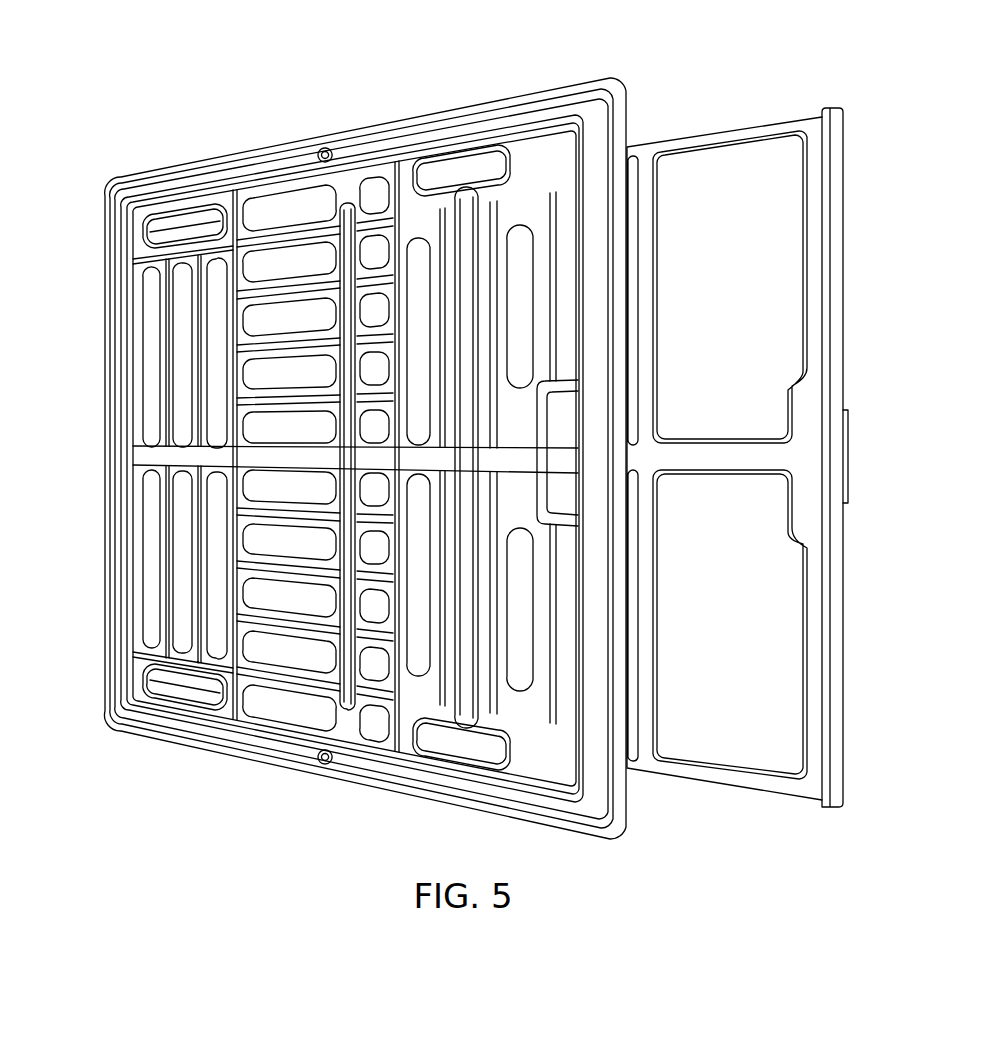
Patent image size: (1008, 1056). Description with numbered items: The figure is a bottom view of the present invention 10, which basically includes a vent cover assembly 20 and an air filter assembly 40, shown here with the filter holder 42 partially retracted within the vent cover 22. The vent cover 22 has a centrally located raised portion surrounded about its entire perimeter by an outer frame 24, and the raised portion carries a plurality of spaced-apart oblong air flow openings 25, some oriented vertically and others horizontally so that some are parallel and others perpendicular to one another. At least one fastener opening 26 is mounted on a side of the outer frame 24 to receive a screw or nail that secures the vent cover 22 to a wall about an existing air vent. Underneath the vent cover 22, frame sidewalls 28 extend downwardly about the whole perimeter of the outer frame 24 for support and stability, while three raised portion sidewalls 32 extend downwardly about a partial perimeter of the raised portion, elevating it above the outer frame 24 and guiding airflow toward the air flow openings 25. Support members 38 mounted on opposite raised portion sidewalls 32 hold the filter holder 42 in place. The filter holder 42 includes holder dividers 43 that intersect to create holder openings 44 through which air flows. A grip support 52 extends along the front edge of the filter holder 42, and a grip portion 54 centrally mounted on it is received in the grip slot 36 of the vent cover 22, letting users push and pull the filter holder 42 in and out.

The present invention 10 is at (148, 95).
The vent cover assembly 20 is at (100, 283).
The vent cover 22 is at (100, 340).
The outer frame 24 is at (592, 115).
The air flow openings 25 is at (150, 510).
The fastener opening 26 is at (322, 148).
The frame sidewalls 28 is at (470, 105).
The raised portion sidewalls 32 is at (165, 215).
The grip slot 36 is at (560, 482).
The support members 38 is at (195, 225).
The air filter assembly 40 is at (700, 128).
The filter holder 42 is at (748, 125).
The holder dividers 43 is at (760, 442).
The holder openings 44 is at (728, 742).
The grip support 52 is at (835, 368).
The grip portion 54 is at (850, 462).